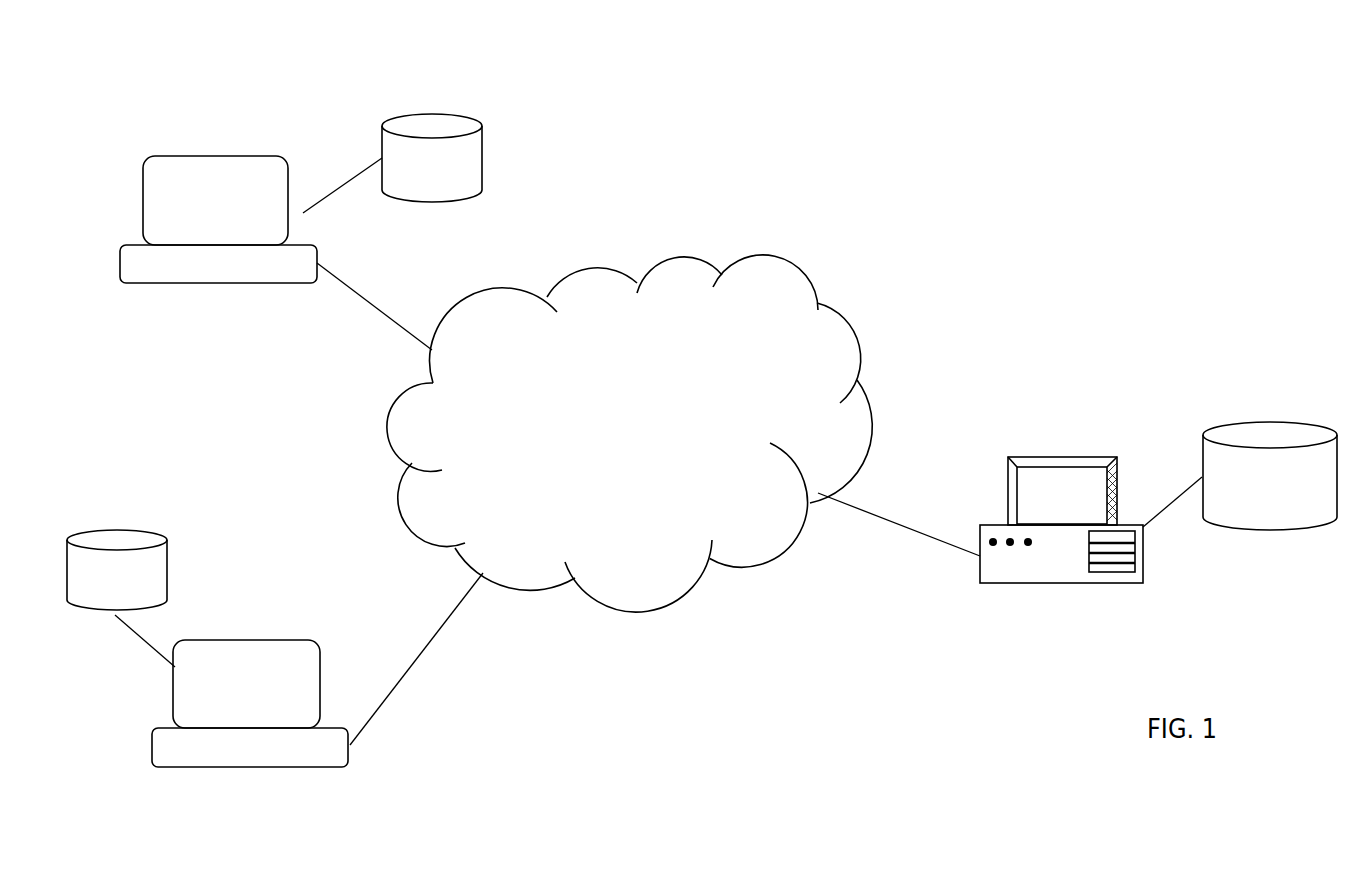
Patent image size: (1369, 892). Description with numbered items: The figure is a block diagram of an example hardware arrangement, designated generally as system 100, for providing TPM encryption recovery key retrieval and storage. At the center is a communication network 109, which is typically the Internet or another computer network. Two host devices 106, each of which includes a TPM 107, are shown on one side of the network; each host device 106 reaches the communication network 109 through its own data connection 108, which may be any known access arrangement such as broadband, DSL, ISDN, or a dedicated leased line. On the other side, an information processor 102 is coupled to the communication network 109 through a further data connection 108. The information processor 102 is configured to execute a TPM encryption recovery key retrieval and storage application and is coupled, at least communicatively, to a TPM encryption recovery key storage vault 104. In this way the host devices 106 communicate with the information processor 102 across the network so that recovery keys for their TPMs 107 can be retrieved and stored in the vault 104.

The system 100 is at (898, 207).
The information processor 102 is at (1007, 488).
The TPM encryption recovery key storage vault 104 is at (1335, 438).
The host device 106 is at (123, 253).
The TPM 107 is at (395, 135).
The data connection 108 is at (380, 305).
The communication network 109 is at (660, 257).